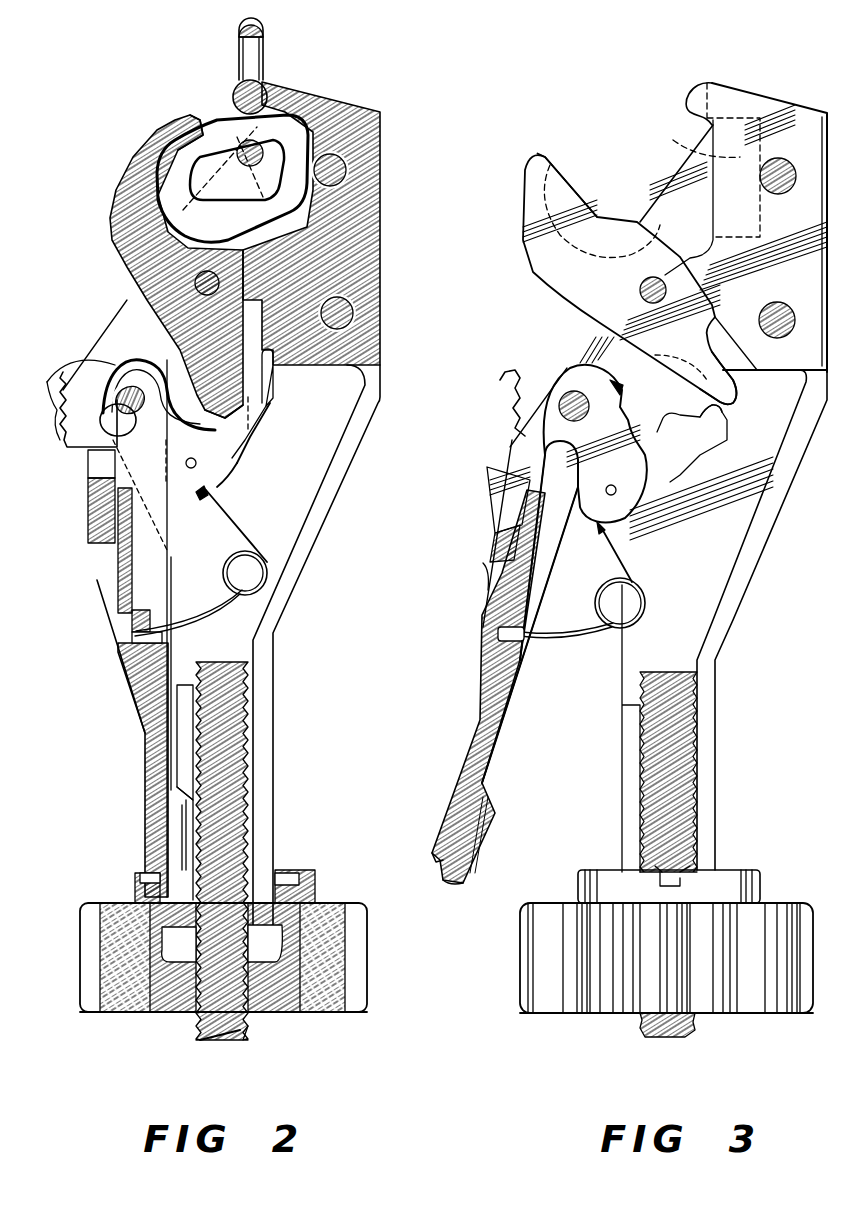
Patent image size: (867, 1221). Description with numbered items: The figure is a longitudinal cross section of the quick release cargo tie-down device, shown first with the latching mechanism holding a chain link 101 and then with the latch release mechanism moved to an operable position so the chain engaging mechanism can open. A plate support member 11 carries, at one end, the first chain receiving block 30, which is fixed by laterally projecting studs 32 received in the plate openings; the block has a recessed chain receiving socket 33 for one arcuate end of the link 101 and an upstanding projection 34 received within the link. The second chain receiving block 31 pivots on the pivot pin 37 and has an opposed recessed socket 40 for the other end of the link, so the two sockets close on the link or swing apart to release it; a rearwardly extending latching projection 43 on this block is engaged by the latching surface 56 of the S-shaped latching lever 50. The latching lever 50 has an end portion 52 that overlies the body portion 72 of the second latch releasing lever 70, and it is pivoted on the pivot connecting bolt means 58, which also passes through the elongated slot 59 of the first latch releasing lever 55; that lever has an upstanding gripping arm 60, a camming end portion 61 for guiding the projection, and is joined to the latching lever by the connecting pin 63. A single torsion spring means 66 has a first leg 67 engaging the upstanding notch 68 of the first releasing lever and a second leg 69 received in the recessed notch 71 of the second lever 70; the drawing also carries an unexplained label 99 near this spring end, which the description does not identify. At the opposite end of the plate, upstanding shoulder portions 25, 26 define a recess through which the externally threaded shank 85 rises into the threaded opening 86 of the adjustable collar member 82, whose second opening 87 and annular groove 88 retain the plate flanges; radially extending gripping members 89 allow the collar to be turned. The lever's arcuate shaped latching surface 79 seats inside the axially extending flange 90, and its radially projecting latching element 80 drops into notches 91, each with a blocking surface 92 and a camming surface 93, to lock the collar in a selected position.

In FIG. 2, the plate support member 11 is at (276, 646).
In FIG. 3, the plate support member 11 is at (728, 632).
In FIG. 2, the upstanding shoulder portion 25 is at (176, 772).
In FIG. 3, the upstanding shoulder portion 25 is at (621, 747).
In FIG. 2, the upstanding shoulder portion 26 is at (258, 760).
In FIG. 3, the upstanding shoulder portion 26 is at (712, 738).
In FIG. 2, the first chain receiving block 30 is at (372, 104).
In FIG. 3, the first chain receiving block 30 is at (785, 108).
In FIG. 2, the second chain receiving block 31 is at (113, 238).
In FIG. 3, the second chain receiving block 31 is at (521, 214).
In FIG. 2, the laterally projecting studs 32 is at (346, 178).
In FIG. 3, the laterally projecting studs 32 is at (780, 162).
In FIG. 2, the recessed chain receiving socket 33 is at (295, 120).
In FIG. 3, the recessed chain receiving socket 33 is at (680, 145).
In FIG. 2, the upstanding projection 34 is at (236, 95).
In FIG. 3, the upstanding projection 34 is at (692, 84).
In FIG. 2, the pivot pin 37 is at (178, 320).
In FIG. 3, the pivot pin 37 is at (660, 278).
In FIG. 2, the recessed socket 40 is at (156, 150).
In FIG. 3, the recessed socket 40 is at (568, 170).
In FIG. 2, the latching projection 43 is at (222, 420).
In FIG. 3, the latching projection 43 is at (730, 406).
In FIG. 2, the latching lever 50 is at (144, 360).
In FIG. 3, the latching lever 50 is at (508, 470).
In FIG. 2, the end portion 52 is at (88, 512).
In FIG. 3, the end portion 52 is at (490, 508).
In FIG. 2, the first latch releasing lever 55 is at (240, 470).
In FIG. 3, the first latch releasing lever 55 is at (540, 362).
In FIG. 2, the latching surface 56 is at (256, 420).
In FIG. 3, the latching surface 56 is at (657, 436).
In FIG. 2, the pivot connecting bolt means 58 is at (118, 388).
In FIG. 3, the pivot connecting bolt means 58 is at (570, 395).
In FIG. 2, the elongated slot 59 is at (60, 386).
In FIG. 2, the upstanding gripping arm 60 is at (56, 415).
In FIG. 3, the upstanding gripping arm 60 is at (498, 390).
In FIG. 2, the camming end portion 61 is at (275, 380).
In FIG. 3, the camming end portion 61 is at (700, 410).
In FIG. 2, the connecting pin 63 is at (195, 468).
In FIG. 3, the connecting pin 63 is at (617, 487).
In FIG. 2, the torsion spring means 66 is at (264, 551).
In FIG. 3, the torsion spring means 66 is at (648, 597).
In FIG. 3, the first leg 67 is at (612, 527).
In FIG. 2, the upstanding notch 68 is at (197, 505).
In FIG. 3, the upstanding notch 68 is at (598, 540).
In FIG. 3, the second leg 69 is at (524, 644).
In FIG. 2, the second latch releasing lever 70 is at (128, 702).
In FIG. 3, the second latch releasing lever 70 is at (479, 668).
In FIG. 2, the recessed notch 71 is at (176, 625).
In FIG. 3, the recessed notch 71 is at (512, 614).
In FIG. 2, the body portion 72 is at (118, 576).
In FIG. 3, the body portion 72 is at (486, 563).
In FIG. 3, the arcuate shaped latching surface 79 is at (450, 886).
In FIG. 3, the radially projecting latching element 80 is at (430, 860).
In FIG. 2, the adjustable collar member 82 is at (152, 1015).
In FIG. 3, the adjustable collar member 82 is at (572, 1016).
In FIG. 2, the externally threaded shank 85 is at (225, 1044).
In FIG. 3, the externally threaded shank 85 is at (668, 1038).
In FIG. 2, the threaded opening 86 is at (250, 1022).
In FIG. 2, the second opening 87 is at (140, 873).
In FIG. 2, the annular groove 88 is at (160, 932).
In FIG. 2, the radially extending gripping members 89 is at (80, 962).
In FIG. 3, the radially extending gripping members 89 is at (755, 918).
In FIG. 2, the axially extending flange 90 is at (308, 872).
In FIG. 3, the axially extending flange 90 is at (578, 896).
In FIG. 3, the notches 91 is at (682, 884).
In FIG. 3, the blocking surface 92 is at (656, 866).
In FIG. 3, the camming surface 93 is at (686, 866).
In FIG. 2, the spring anchor 99 is at (165, 642).
In FIG. 2, the link 101 is at (222, 130).